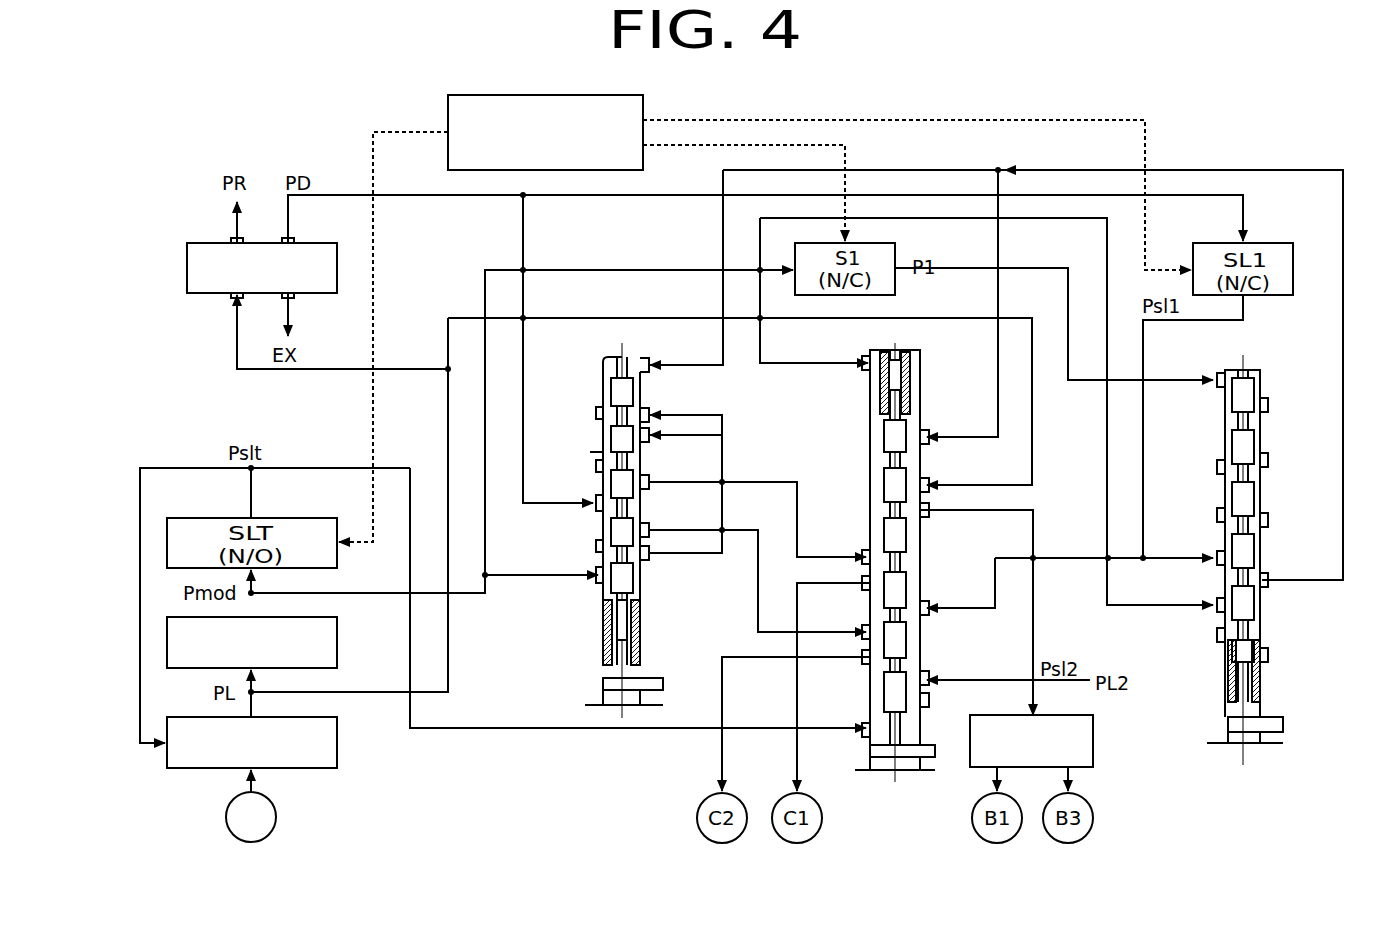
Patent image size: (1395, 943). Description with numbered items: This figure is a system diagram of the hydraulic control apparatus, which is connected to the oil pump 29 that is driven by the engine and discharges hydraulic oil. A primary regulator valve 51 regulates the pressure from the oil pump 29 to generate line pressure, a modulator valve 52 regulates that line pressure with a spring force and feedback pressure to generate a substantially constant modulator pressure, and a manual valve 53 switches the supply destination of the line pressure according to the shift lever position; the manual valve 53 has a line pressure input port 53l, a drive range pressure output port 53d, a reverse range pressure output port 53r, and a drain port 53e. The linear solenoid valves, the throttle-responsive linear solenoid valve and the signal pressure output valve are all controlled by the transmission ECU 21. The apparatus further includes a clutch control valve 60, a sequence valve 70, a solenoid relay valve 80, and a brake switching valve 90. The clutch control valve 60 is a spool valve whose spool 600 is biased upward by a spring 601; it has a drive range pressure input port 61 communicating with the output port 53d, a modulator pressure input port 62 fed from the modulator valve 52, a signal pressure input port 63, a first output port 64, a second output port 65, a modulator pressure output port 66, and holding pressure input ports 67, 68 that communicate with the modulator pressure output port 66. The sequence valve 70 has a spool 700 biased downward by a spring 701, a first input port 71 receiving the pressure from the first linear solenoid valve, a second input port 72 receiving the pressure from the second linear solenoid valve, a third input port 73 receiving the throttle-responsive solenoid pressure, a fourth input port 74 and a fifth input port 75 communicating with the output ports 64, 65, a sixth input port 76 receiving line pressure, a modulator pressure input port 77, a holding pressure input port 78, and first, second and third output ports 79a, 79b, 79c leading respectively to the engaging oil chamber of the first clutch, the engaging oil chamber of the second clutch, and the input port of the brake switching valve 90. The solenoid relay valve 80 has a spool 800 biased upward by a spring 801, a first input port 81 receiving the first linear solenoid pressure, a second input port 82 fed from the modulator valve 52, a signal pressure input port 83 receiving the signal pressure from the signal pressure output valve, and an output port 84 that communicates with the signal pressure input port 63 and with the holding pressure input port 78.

The transmission ECU 21 is at (447, 120).
The oil pump 29 is at (226, 817).
The primary regulator valve 51 is at (302, 768).
The modulator valve 52 is at (200, 668).
The manual valve 53 is at (262, 243).
The reverse range pressure output port 53r is at (238, 243).
The drive range pressure output port 53d is at (294, 243).
The line pressure input port 53l is at (235, 302).
The drain port 53e is at (294, 301).
The clutch control valve 60 is at (628, 522).
The drive range pressure input port 61 is at (595, 503).
The modulator pressure input port 62 is at (598, 575).
The signal pressure input port 63 is at (650, 362).
The first output port 64 is at (650, 490).
The second output port 65 is at (650, 535).
The modulator pressure output port 66 is at (650, 565).
The holding pressure input port 67 is at (650, 418).
The holding pressure input port 68 is at (650, 445).
The spool 600 is at (603, 612).
The spring 601 is at (603, 650).
The sequence valve 70 is at (910, 563).
The first input port 71 is at (925, 605).
The second input port 72 is at (925, 675).
The third input port 73 is at (868, 735).
The fourth input port 74 is at (868, 552).
The fifth input port 75 is at (868, 630).
The sixth input port 76 is at (925, 480).
The modulator pressure input port 77 is at (870, 368).
The holding pressure input port 78 is at (925, 435).
The first output port 79a is at (868, 580).
The second output port 79b is at (868, 660).
The third output port 79c is at (925, 515).
The spool 700 is at (905, 700).
The spring 701 is at (905, 360).
The solenoid relay valve 80 is at (1246, 585).
The first input port 81 is at (1215, 553).
The second input port 82 is at (1215, 602).
The signal pressure input port 83 is at (1215, 388).
The output port 84 is at (1268, 577).
The spool 800 is at (1262, 660).
The spring 801 is at (1227, 689).
The B1/B3 switching valve 90 is at (1095, 740).